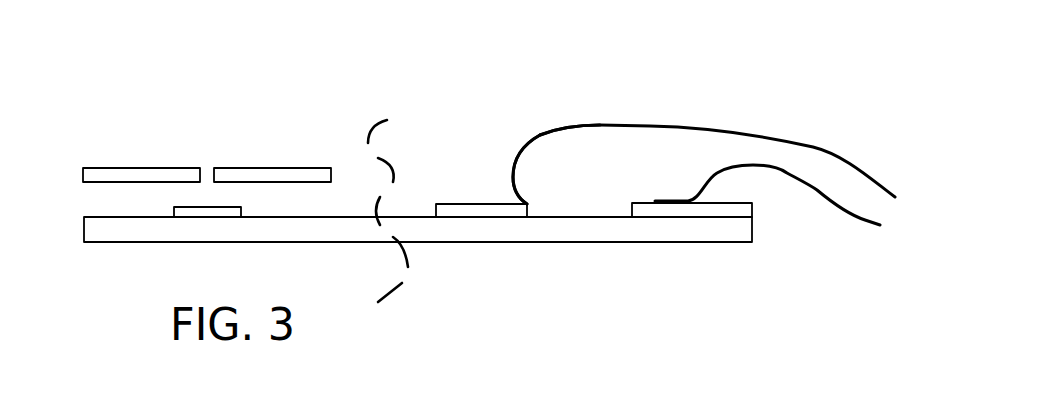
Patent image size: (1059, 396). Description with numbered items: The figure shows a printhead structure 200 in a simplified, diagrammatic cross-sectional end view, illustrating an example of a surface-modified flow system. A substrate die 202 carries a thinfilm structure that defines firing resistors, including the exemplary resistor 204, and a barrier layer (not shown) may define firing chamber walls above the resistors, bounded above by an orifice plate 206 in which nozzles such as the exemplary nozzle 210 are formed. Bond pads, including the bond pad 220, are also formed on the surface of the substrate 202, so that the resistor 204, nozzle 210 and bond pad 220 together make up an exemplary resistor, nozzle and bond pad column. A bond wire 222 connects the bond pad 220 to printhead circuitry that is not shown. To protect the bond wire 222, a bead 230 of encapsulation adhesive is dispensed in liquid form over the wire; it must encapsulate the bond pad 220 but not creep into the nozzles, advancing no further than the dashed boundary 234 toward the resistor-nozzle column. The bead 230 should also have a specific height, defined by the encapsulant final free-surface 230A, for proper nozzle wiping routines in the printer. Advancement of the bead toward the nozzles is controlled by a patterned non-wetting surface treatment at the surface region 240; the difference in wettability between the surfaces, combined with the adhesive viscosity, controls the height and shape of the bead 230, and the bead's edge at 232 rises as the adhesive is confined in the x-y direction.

The printhead structure 200 is at (289, 56).
The substrate die 202 is at (84, 228).
The resistor 204 is at (175, 209).
The orifice plate 206 is at (103, 168).
The nozzle 210 is at (206, 167).
The bond pad 220 is at (643, 205).
The bond wire 222 is at (810, 178).
The bead of encapsulation adhesive 230 is at (588, 157).
The encapsulant final free-surface 230A is at (536, 128).
The encapsulant sidewall 232 is at (520, 157).
The dashed boundary 234 is at (376, 128).
The surface region 240 is at (490, 203).